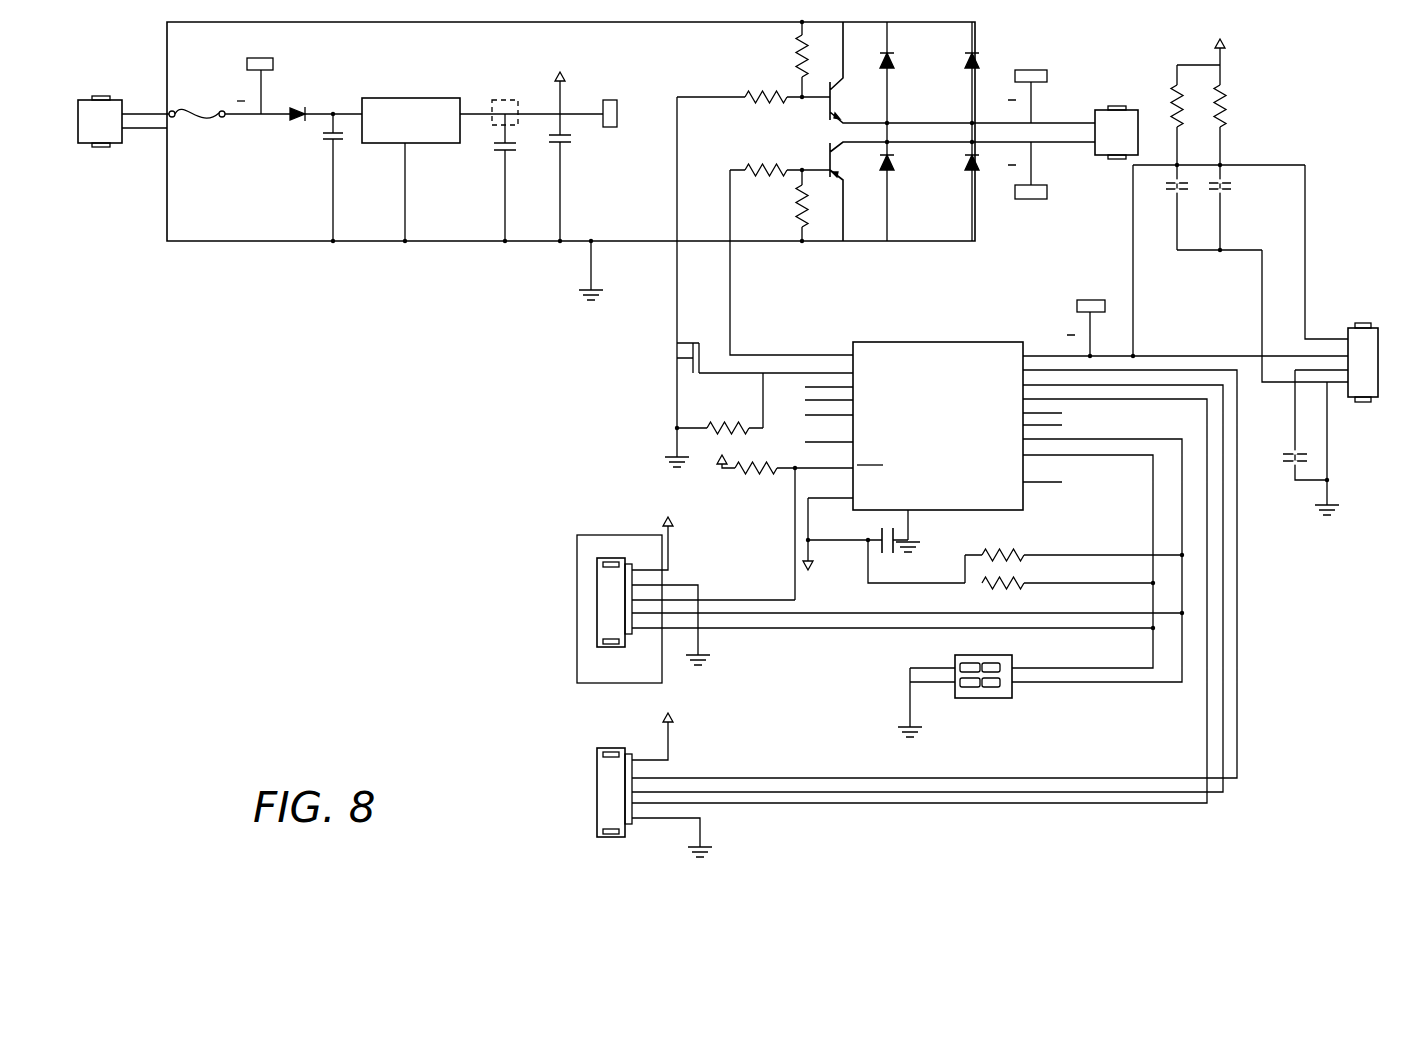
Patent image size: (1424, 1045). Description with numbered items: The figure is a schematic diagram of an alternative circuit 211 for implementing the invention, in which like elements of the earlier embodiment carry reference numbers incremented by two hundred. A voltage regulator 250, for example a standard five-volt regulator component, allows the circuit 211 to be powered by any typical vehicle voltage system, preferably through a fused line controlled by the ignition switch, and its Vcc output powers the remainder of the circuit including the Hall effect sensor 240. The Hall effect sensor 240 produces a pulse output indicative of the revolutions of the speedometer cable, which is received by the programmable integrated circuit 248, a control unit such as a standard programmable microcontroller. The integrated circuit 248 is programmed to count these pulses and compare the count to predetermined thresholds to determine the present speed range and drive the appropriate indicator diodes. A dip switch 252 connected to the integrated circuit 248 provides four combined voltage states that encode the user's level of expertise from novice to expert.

The circuit 211 is at (398, 604).
The Hall effect sensor 240 is at (1368, 353).
The programmable integrated circuit 248 is at (978, 341).
The voltage regulator 250 is at (460, 99).
The dip switch 252 is at (1005, 690).